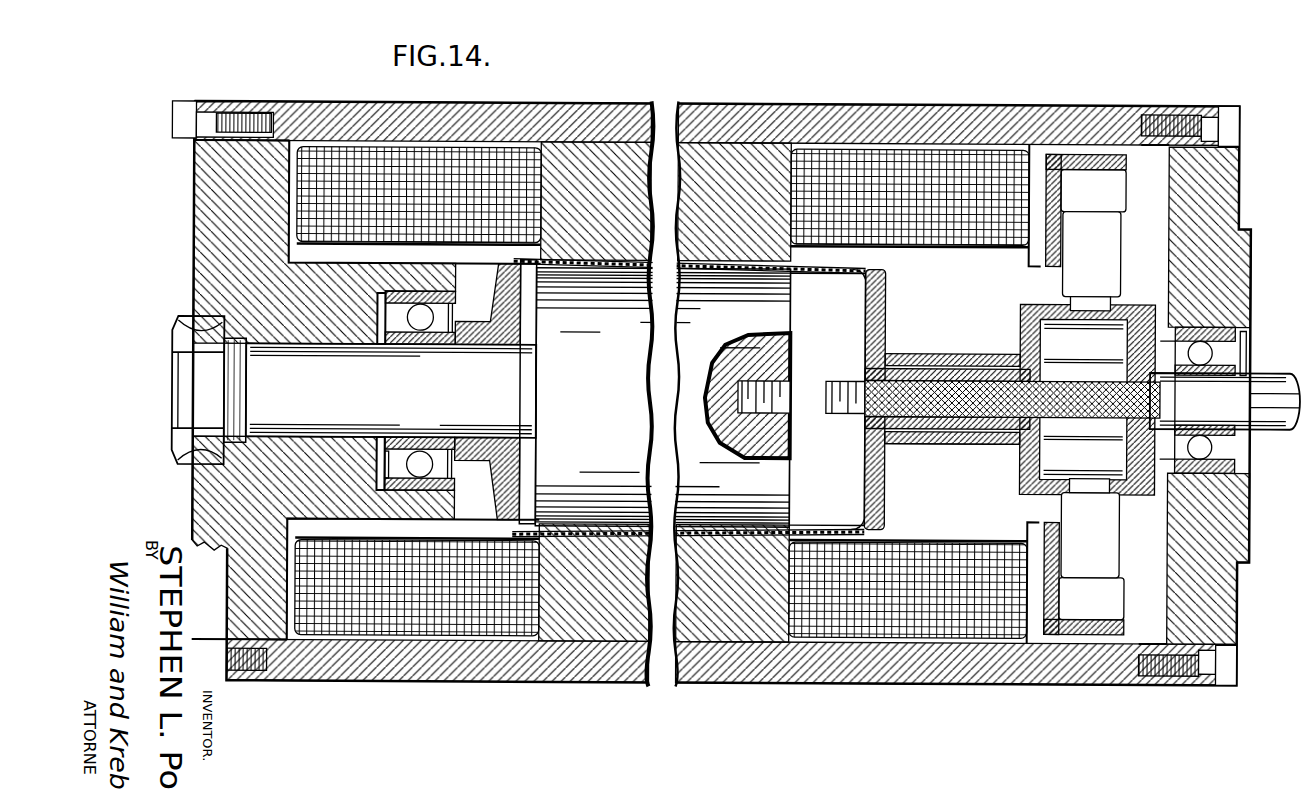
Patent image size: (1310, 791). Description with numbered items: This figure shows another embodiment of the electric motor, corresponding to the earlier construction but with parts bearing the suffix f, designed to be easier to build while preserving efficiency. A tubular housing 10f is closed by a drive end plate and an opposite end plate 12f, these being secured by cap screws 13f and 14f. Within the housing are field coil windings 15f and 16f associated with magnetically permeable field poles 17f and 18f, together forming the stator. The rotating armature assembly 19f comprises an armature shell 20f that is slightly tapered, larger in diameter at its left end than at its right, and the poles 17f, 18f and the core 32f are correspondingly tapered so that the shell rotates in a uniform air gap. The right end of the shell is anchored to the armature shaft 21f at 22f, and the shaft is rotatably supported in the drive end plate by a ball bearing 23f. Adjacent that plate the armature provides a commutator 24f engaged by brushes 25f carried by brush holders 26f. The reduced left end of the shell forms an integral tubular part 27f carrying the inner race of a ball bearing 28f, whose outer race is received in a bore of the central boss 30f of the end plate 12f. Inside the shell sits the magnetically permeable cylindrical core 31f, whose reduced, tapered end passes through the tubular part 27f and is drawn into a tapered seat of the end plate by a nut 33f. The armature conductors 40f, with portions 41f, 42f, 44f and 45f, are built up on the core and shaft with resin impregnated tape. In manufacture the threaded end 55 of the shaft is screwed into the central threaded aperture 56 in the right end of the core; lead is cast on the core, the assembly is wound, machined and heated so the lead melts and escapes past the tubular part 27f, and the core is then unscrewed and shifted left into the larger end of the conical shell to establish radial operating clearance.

The tubular housing 10f is at (803, 118).
The end plate 12f is at (205, 237).
The cap screws 13f is at (1215, 122).
The cap screws 14f is at (186, 130).
The field coil winding 15f is at (915, 165).
The field coil winding 16f is at (905, 625).
The field pole 17f is at (590, 160).
The field pole 18f is at (730, 625).
The armature assembly 19f is at (900, 340).
The armature shell 20f is at (850, 272).
The armature shaft 21f is at (1250, 376).
The shaft anchoring point 22f is at (940, 442).
The ball bearing 23f is at (1205, 328).
The commutator 24f is at (470, 490).
The brushes 25f is at (1070, 300).
The brush holders 26f is at (1056, 190).
The tubular part 27f is at (478, 312).
The ball bearing 28f is at (381, 306).
The central boss 30f is at (368, 518).
The cylindrical core 31f is at (608, 396).
The core 32f is at (391, 390).
The nut 33f is at (192, 447).
The armature conductors 40f is at (855, 516).
The wire portion 41f is at (918, 445).
The wire portion 42f is at (806, 520).
The wire portion 44f is at (806, 280).
The wire portion 45f is at (975, 305).
The threaded end 55 is at (835, 410).
The central threaded aperture 56 is at (768, 392).